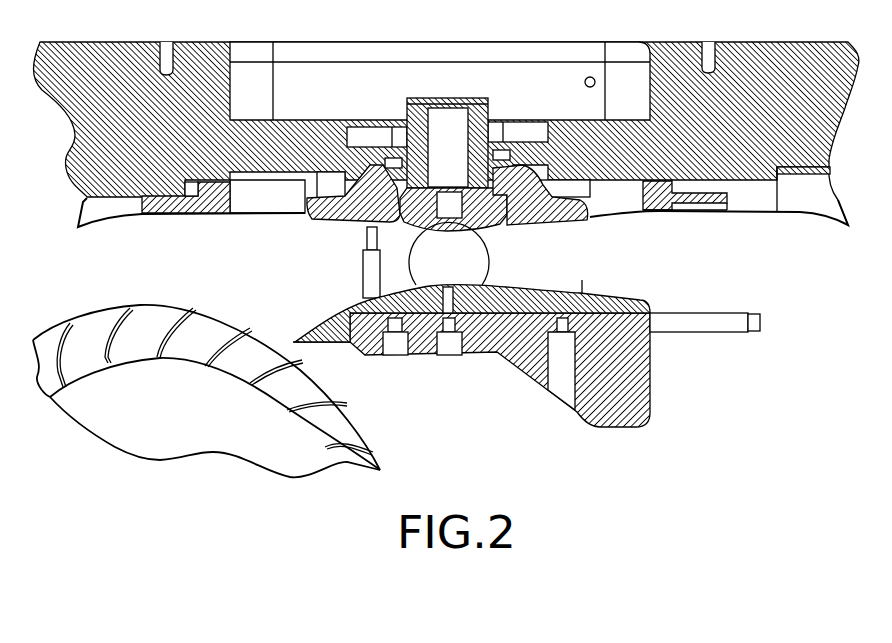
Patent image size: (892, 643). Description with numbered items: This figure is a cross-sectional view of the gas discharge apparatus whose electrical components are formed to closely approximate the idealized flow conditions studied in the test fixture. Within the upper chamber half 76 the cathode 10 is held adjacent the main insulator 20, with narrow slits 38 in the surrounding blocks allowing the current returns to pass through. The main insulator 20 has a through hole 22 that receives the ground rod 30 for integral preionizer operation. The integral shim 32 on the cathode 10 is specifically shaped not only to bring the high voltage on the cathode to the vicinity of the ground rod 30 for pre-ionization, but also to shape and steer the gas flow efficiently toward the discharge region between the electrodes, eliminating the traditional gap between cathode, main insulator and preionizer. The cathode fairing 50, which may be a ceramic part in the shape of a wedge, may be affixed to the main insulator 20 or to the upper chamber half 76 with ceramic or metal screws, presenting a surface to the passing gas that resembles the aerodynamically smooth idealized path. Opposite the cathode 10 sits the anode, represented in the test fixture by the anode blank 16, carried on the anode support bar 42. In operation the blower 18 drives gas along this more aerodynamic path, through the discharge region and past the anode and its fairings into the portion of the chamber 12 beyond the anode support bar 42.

The cathode 10 is at (390, 216).
The chamber 12 is at (508, 462).
The anode blank 16 is at (582, 282).
The blower 18 is at (383, 430).
The main insulator 20 is at (317, 203).
The through hole 22 is at (380, 215).
The ground rod 30 is at (353, 224).
The integral shim 32 is at (392, 216).
The narrow slits 38 is at (262, 204).
The anode support bar 42 is at (652, 405).
The cathode fairing 50 is at (490, 235).
The upper chamber half 76 is at (737, 211).